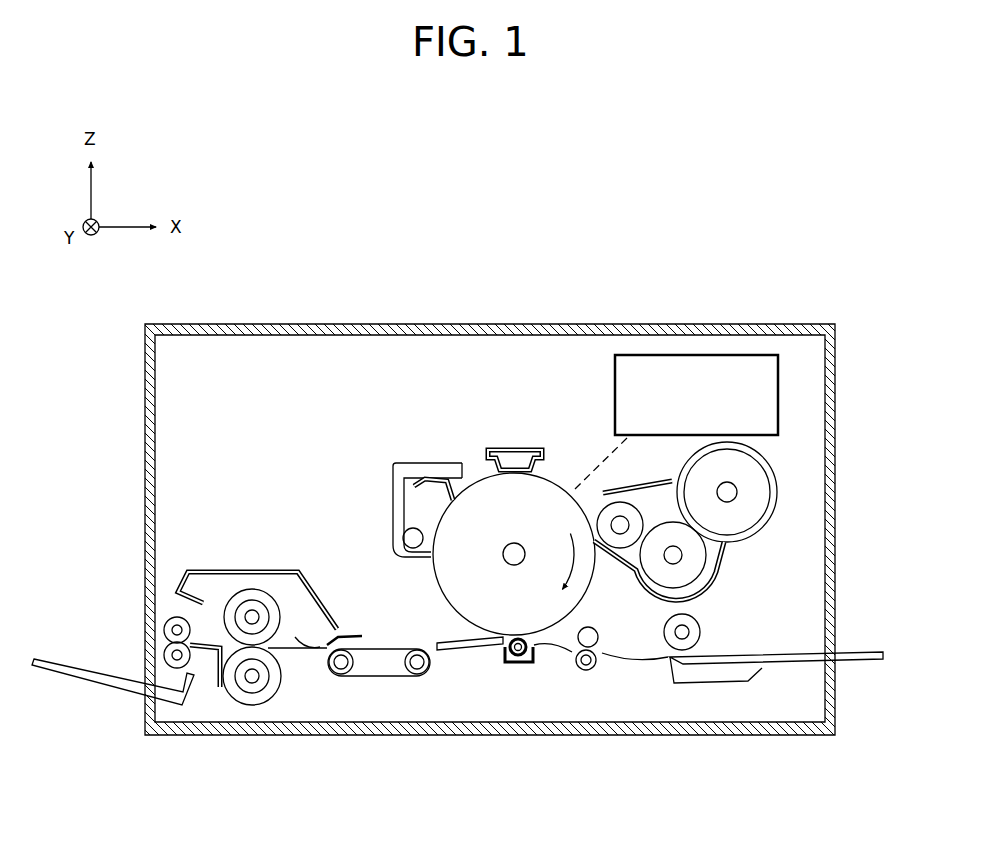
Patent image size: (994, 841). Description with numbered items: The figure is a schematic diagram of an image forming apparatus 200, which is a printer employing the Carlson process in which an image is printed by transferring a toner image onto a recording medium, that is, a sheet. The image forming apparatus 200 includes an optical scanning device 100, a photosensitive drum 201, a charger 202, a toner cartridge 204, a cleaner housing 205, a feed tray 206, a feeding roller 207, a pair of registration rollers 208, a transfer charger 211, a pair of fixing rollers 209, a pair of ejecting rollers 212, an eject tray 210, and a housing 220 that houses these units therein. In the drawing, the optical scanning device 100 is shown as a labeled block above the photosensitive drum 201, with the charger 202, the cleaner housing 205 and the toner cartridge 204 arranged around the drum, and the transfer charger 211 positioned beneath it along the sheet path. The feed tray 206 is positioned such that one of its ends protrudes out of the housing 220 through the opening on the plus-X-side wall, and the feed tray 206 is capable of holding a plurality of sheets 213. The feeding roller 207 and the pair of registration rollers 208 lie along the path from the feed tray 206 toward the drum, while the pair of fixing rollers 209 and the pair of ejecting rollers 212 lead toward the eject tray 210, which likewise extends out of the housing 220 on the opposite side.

The optical scanning device 100 is at (613, 387).
The image forming apparatus 200 is at (606, 291).
The photosensitive drum 201 is at (481, 478).
The charger 202 is at (509, 449).
The toner cartridge 204 is at (752, 538).
The cleaner housing 205 is at (391, 504).
The feed tray 206 is at (856, 670).
The feeding roller 207 is at (700, 632).
The pair of registration rollers 208 is at (590, 671).
The pair of fixing rollers 209 is at (252, 589).
The eject tray 210 is at (74, 684).
The transfer charger 211 is at (508, 663).
The pair of ejecting rollers 212 is at (163, 622).
The sheets 213 is at (776, 657).
The housing 220 is at (776, 322).